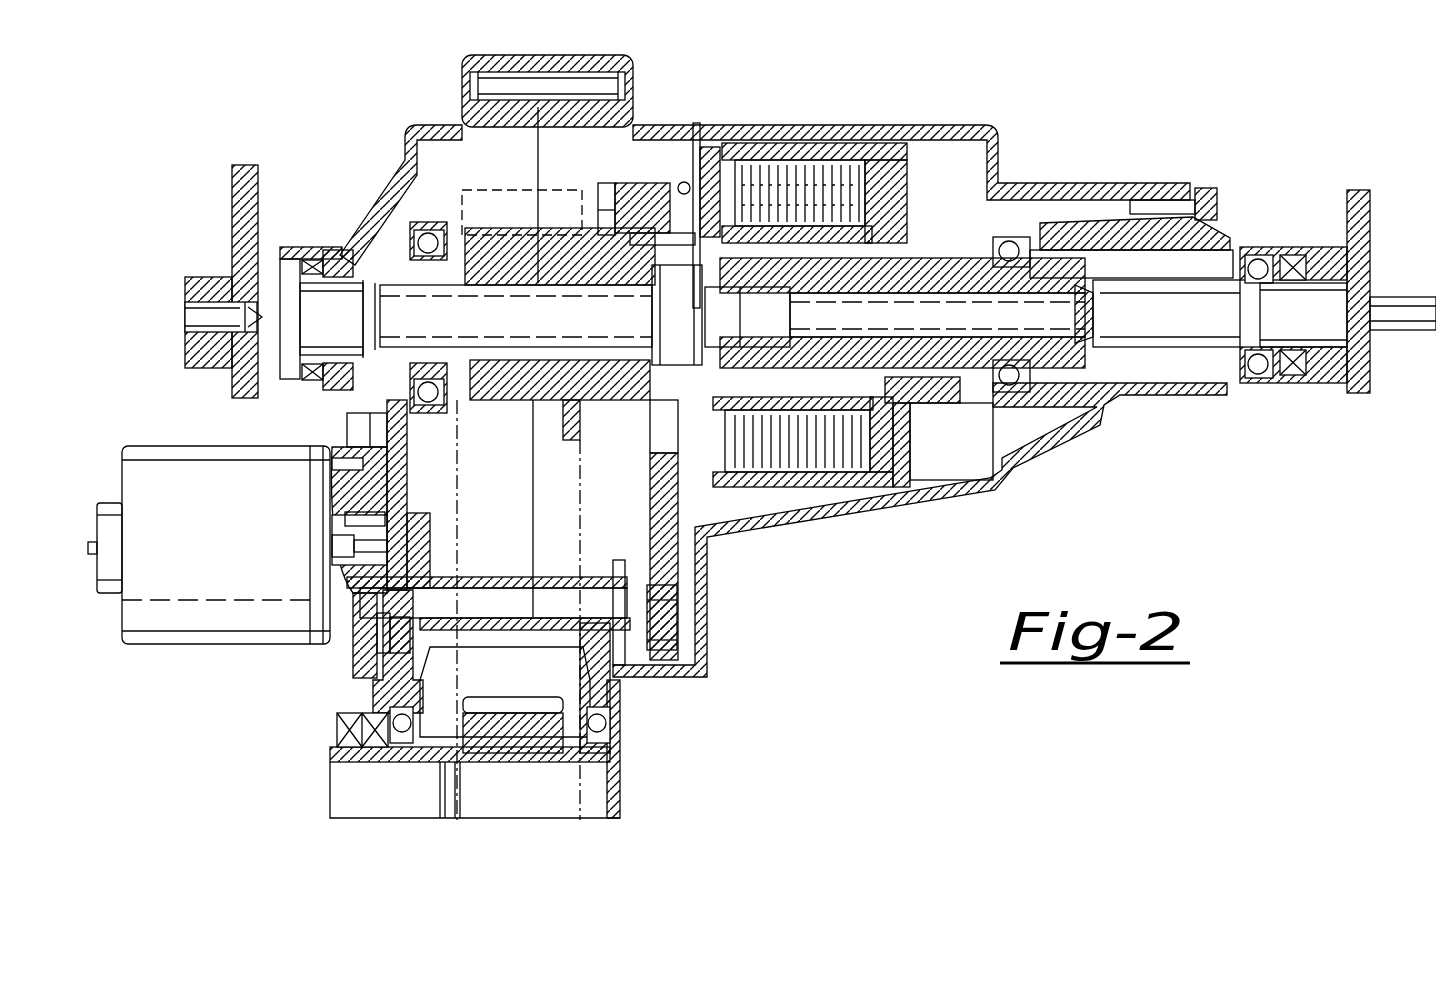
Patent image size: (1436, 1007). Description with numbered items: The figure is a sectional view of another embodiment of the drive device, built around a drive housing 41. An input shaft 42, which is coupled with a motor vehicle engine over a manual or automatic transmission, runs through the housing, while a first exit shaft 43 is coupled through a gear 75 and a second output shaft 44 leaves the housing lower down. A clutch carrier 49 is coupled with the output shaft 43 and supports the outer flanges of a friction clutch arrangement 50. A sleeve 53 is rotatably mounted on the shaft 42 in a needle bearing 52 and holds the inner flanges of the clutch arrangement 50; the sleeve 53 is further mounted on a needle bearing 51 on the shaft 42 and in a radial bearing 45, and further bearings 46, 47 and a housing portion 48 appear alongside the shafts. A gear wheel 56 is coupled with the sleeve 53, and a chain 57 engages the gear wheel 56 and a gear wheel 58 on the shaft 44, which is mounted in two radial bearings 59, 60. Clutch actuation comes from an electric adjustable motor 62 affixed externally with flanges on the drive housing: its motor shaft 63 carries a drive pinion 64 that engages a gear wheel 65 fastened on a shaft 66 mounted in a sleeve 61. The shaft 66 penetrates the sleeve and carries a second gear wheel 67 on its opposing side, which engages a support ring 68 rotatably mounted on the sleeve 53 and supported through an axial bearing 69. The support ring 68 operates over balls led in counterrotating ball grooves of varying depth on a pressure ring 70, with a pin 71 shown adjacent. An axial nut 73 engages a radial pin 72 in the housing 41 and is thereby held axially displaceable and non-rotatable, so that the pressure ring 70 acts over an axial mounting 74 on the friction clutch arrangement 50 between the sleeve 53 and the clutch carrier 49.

The drive housing 41 is at (430, 125).
The input shaft 42 is at (250, 394).
The first exit shaft 43 is at (1200, 327).
The second output shaft 44 is at (360, 763).
The radial bearing 45 is at (410, 225).
The bearing 46 is at (1010, 240).
The bearing 47 is at (1240, 250).
The clutch housing 48 is at (930, 403).
The clutch carrier 49 is at (920, 443).
The friction clutch arrangement 50 is at (813, 457).
The needle bearing 51 is at (903, 440).
The needle bearing 52 is at (655, 337).
The sleeve 53 is at (855, 385).
The gear wheel 56 is at (517, 393).
The chain 57 is at (485, 195).
The gear wheel 58 is at (615, 763).
The radial bearing 59 is at (600, 743).
The radial bearing 60 is at (413, 762).
The sleeve 61 is at (540, 612).
The electric adjustable motor 62 is at (165, 600).
The motor shaft 63 is at (343, 552).
The drive pinion 64 is at (348, 519).
The gear wheel 65 is at (353, 652).
The shaft 66 is at (532, 633).
The second gear wheel 67 is at (690, 660).
The support ring 68 is at (680, 188).
The axial bearing 69 is at (605, 195).
The pressure ring 70 is at (745, 143).
The pin 71 is at (690, 140).
The radial pin 72 is at (697, 123).
The axial nut 73 is at (712, 147).
The axial mounting 74 is at (678, 267).
The gear 75 is at (765, 300).